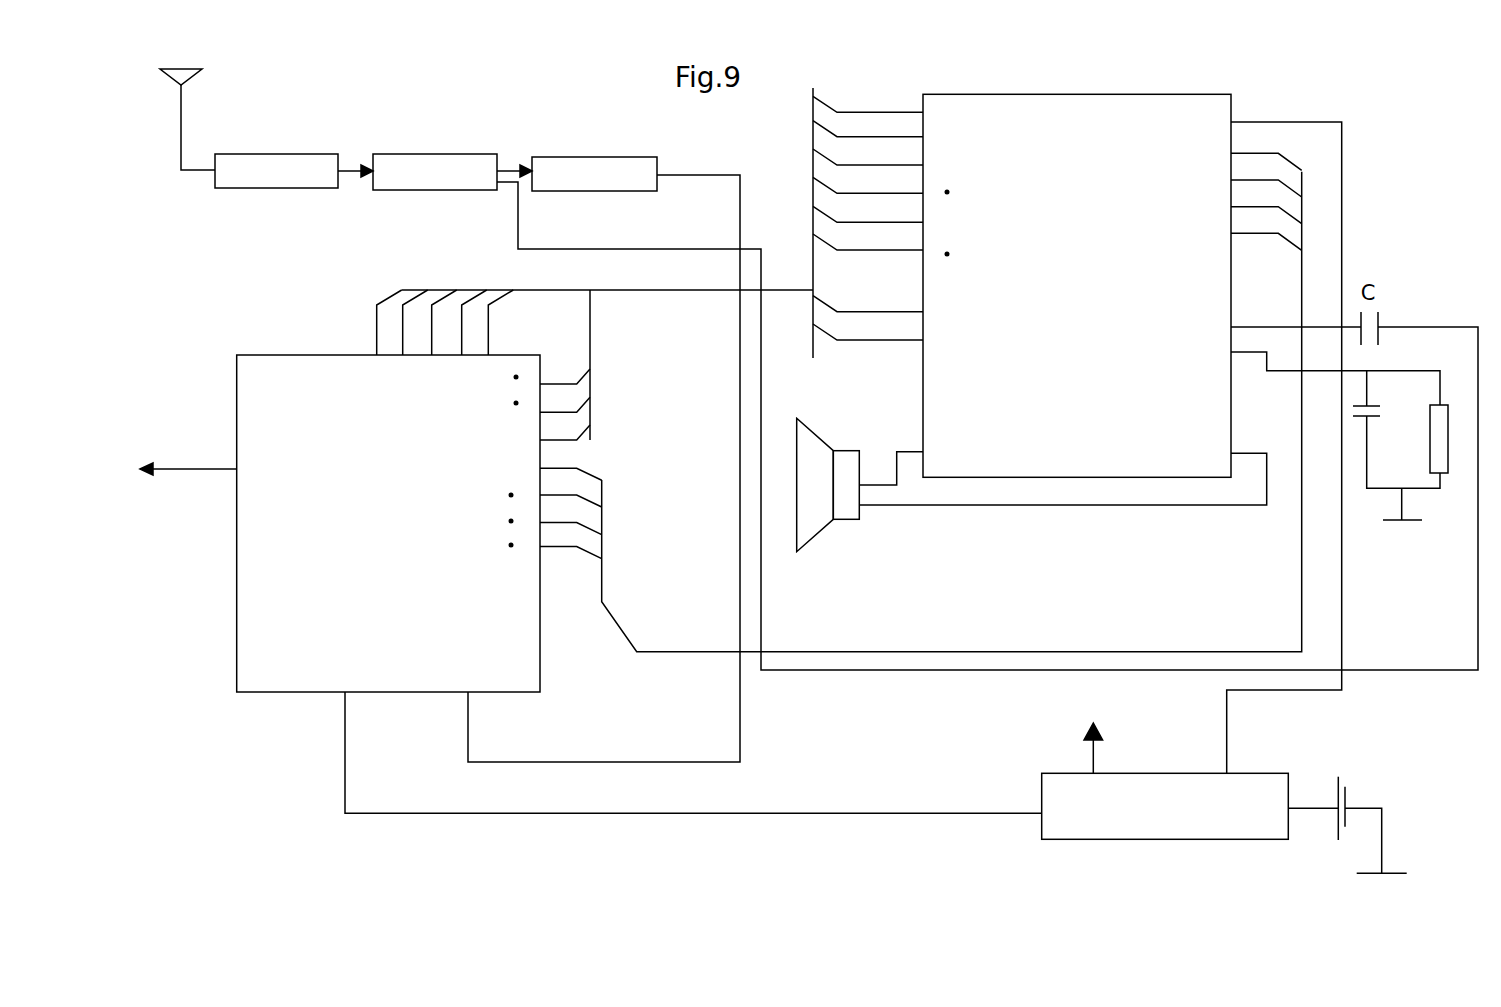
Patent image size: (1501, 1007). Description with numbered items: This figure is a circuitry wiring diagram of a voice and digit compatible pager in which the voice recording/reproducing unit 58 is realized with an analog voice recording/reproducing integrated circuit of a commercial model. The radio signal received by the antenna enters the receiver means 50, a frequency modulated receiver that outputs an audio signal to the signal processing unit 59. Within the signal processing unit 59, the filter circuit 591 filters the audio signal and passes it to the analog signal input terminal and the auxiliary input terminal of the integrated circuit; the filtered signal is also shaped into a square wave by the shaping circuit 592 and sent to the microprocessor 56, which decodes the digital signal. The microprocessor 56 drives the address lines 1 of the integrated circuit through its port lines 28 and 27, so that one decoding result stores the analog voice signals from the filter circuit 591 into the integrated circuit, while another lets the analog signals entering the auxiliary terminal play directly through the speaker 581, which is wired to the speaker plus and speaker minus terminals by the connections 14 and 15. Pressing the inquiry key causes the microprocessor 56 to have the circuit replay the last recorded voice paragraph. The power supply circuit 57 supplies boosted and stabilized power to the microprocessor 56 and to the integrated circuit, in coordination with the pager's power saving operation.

The address input lines 1 is at (868, 217).
The speaker positive connection line 14 is at (891, 454).
The speaker negative connection line 15 is at (1067, 464).
The microprocessor output port lines 27 is at (565, 365).
The microprocessor port bus lines 28 is at (595, 322).
The receiver means 50 is at (276, 190).
The microprocessor 56 is at (721, 432).
The power supply circuit 57 is at (876, 782).
The voice recording/reproducing unit 58 is at (1198, 415).
The signal processing unit 59 is at (497, 173).
The speaker 581 is at (836, 490).
The filter circuit 591 is at (435, 190).
The shaping circuit 592 is at (594, 192).